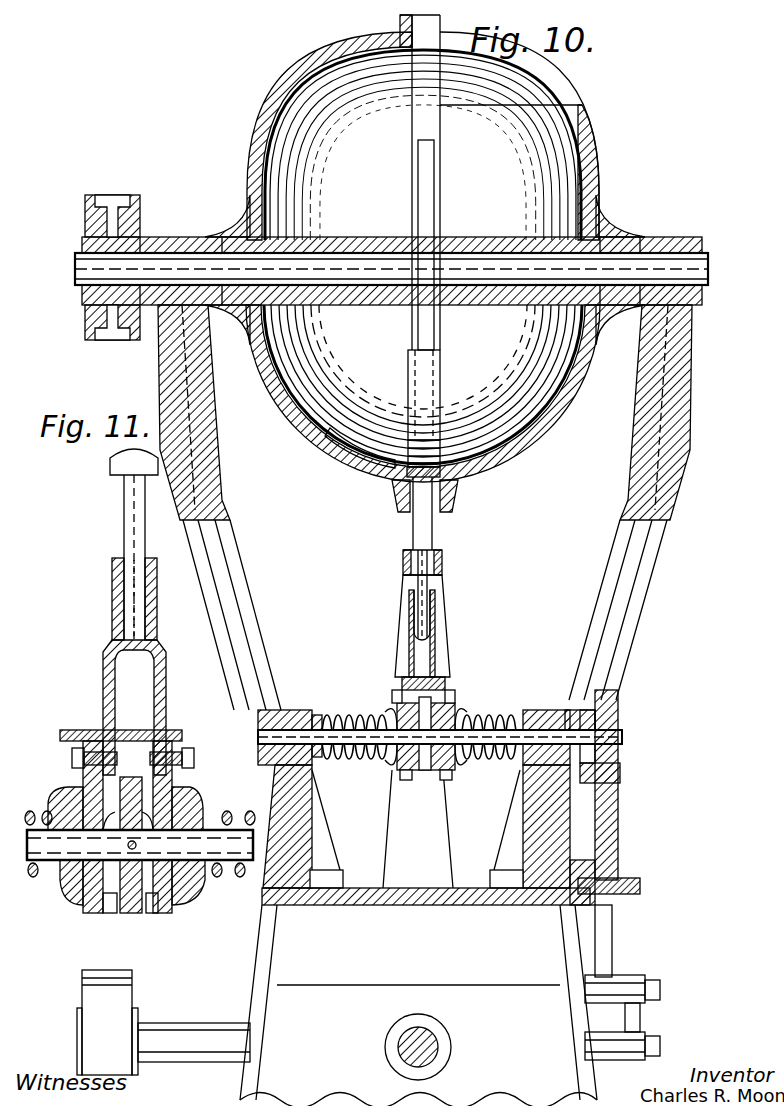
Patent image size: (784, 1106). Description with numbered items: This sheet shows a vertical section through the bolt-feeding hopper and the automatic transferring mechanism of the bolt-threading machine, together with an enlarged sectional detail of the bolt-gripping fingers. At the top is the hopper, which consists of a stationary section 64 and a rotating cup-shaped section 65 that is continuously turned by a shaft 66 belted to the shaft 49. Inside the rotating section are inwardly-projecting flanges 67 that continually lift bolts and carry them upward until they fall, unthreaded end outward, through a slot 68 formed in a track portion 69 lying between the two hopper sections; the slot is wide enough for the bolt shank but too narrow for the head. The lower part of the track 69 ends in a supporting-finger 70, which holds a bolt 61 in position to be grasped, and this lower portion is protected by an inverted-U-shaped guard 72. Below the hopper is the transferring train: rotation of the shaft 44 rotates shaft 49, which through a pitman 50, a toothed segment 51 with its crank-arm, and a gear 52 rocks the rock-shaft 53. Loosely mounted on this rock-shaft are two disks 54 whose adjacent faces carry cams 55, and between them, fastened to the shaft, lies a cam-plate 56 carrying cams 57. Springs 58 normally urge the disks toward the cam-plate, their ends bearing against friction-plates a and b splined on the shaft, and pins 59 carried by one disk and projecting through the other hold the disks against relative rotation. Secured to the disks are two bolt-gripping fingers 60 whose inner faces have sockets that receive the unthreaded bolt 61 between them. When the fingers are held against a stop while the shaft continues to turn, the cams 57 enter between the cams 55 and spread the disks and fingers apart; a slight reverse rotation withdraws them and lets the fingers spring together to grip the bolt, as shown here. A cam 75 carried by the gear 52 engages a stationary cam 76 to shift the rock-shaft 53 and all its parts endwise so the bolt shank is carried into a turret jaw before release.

In FIG. 10, the shaft 44 is at (438, 1055).
In FIG. 11, the shaft 49 is at (178, 1040).
In FIG. 10, the pitman 50 is at (640, 1025).
In FIG. 10, the segment 51 is at (620, 810).
In FIG. 10, the gear 52 is at (612, 720).
In FIG. 10, the rock-shaft 53 is at (330, 730).
In FIG. 11, the rock-shaft 53 is at (72, 842).
In FIG. 10, the disk 54 is at (458, 712).
In FIG. 11, the disk 54 is at (185, 898).
In FIG. 10, the cams 55 is at (392, 696).
In FIG. 11, the cams 55 is at (78, 780).
In FIG. 10, the cam-plate 56 is at (420, 772).
In FIG. 11, the cam-plate 56 is at (132, 915).
In FIG. 11, the cams 57 is at (160, 825).
In FIG. 10, the spring 58 is at (512, 760).
In FIG. 11, the spring 58 is at (220, 877).
In FIG. 11, the pins 59 is at (120, 732).
In FIG. 10, the bolt-gripping finger 60 is at (436, 645).
In FIG. 11, the bolt-gripping finger 60 is at (158, 616).
In FIG. 10, the bolt 61 is at (430, 594).
In FIG. 11, the bolt 61 is at (124, 538).
In FIG. 10, the stationary section 64 is at (535, 462).
In FIG. 10, the rotating cup-shaped section 65 is at (300, 102).
In FIG. 10, the shaft 66 is at (198, 250).
In FIG. 10, the inwardly-projecting flanges 67 is at (350, 488).
In FIG. 10, the slot 68 is at (430, 170).
In FIG. 10, the track portion 69 is at (428, 125).
In FIG. 10, the supporting-finger 70 is at (444, 572).
In FIG. 10, the inverted-U-shaped guard 72 is at (432, 395).
In FIG. 10, the cam 75 is at (562, 710).
In FIG. 10, the stationary cam 76 is at (612, 698).
In FIG. 10, the friction-plate a is at (470, 718).
In FIG. 11, the friction-plate a is at (205, 820).
In FIG. 10, the friction-plate b is at (352, 712).
In FIG. 11, the friction-plate b is at (80, 898).